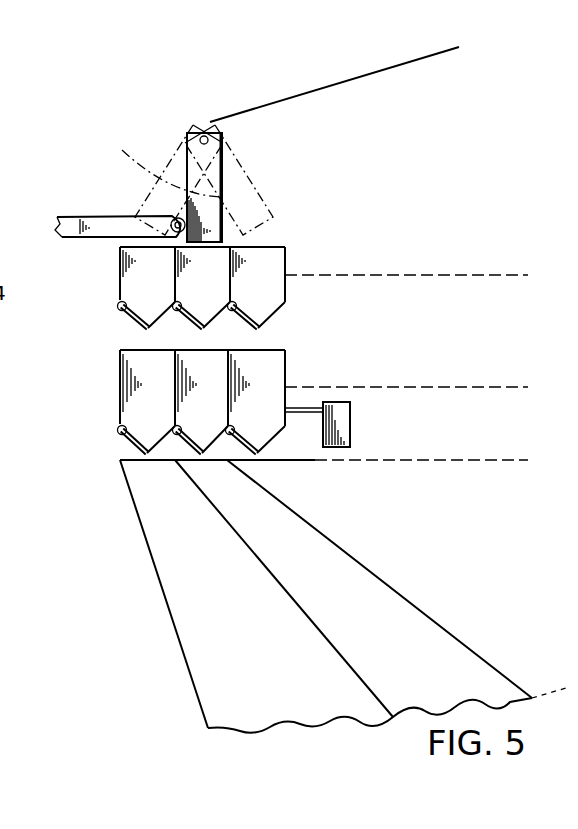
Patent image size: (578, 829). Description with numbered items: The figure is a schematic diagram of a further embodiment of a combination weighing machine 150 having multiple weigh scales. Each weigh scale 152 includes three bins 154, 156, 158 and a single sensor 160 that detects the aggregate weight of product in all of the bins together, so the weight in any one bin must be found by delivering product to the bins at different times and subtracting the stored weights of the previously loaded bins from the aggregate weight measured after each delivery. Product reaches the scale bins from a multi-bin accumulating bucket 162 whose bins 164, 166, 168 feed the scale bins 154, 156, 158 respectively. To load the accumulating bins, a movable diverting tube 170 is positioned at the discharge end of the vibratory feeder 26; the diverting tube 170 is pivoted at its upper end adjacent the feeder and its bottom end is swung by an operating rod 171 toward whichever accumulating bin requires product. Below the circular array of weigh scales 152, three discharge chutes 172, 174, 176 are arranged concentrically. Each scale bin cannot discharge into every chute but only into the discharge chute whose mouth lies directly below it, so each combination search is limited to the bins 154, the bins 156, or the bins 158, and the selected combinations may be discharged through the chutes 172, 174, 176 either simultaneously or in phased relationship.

The vibratory feeder 26 is at (300, 93).
The combination weighing machine 150 is at (164, 144).
The weigh scale 152 is at (279, 388).
The bin 154 is at (142, 358).
The bin 156 is at (188, 356).
The bin 158 is at (270, 372).
The sensor 160 is at (340, 414).
The multi-bin accumulating bucket 162 is at (277, 294).
The bin 164 is at (128, 283).
The bin 166 is at (201, 309).
The bin 168 is at (272, 293).
The movable diverting tube 170 is at (193, 168).
The operating rod 171 is at (112, 227).
The discharge chute 172 is at (180, 643).
The discharge chute 174 is at (318, 632).
The discharge chute 176 is at (442, 632).